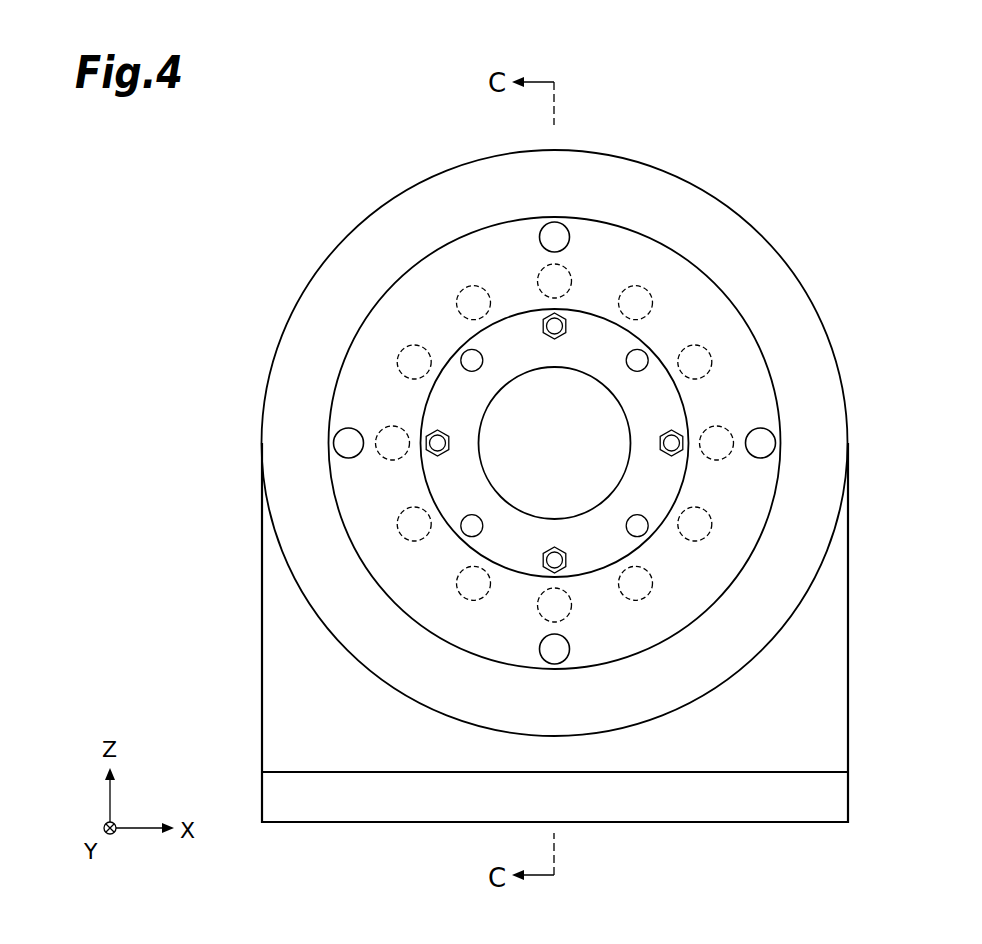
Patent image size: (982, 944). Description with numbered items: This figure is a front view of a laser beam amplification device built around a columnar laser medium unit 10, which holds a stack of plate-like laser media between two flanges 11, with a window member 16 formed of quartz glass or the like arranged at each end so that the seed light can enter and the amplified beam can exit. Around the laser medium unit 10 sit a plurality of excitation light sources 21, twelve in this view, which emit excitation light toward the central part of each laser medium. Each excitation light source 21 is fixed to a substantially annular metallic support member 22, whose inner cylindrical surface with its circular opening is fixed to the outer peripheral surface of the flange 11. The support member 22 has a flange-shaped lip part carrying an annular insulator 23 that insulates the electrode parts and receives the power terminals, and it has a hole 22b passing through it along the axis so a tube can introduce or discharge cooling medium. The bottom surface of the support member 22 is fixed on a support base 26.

The laser medium unit 10 is at (513, 582).
The flange 11 is at (662, 472).
The window member 16 is at (517, 450).
The excitation light source 21 is at (473, 286).
The support member 22 is at (750, 391).
The hole 22b is at (546, 222).
The insulator 23 is at (402, 223).
The support base 26 is at (805, 795).